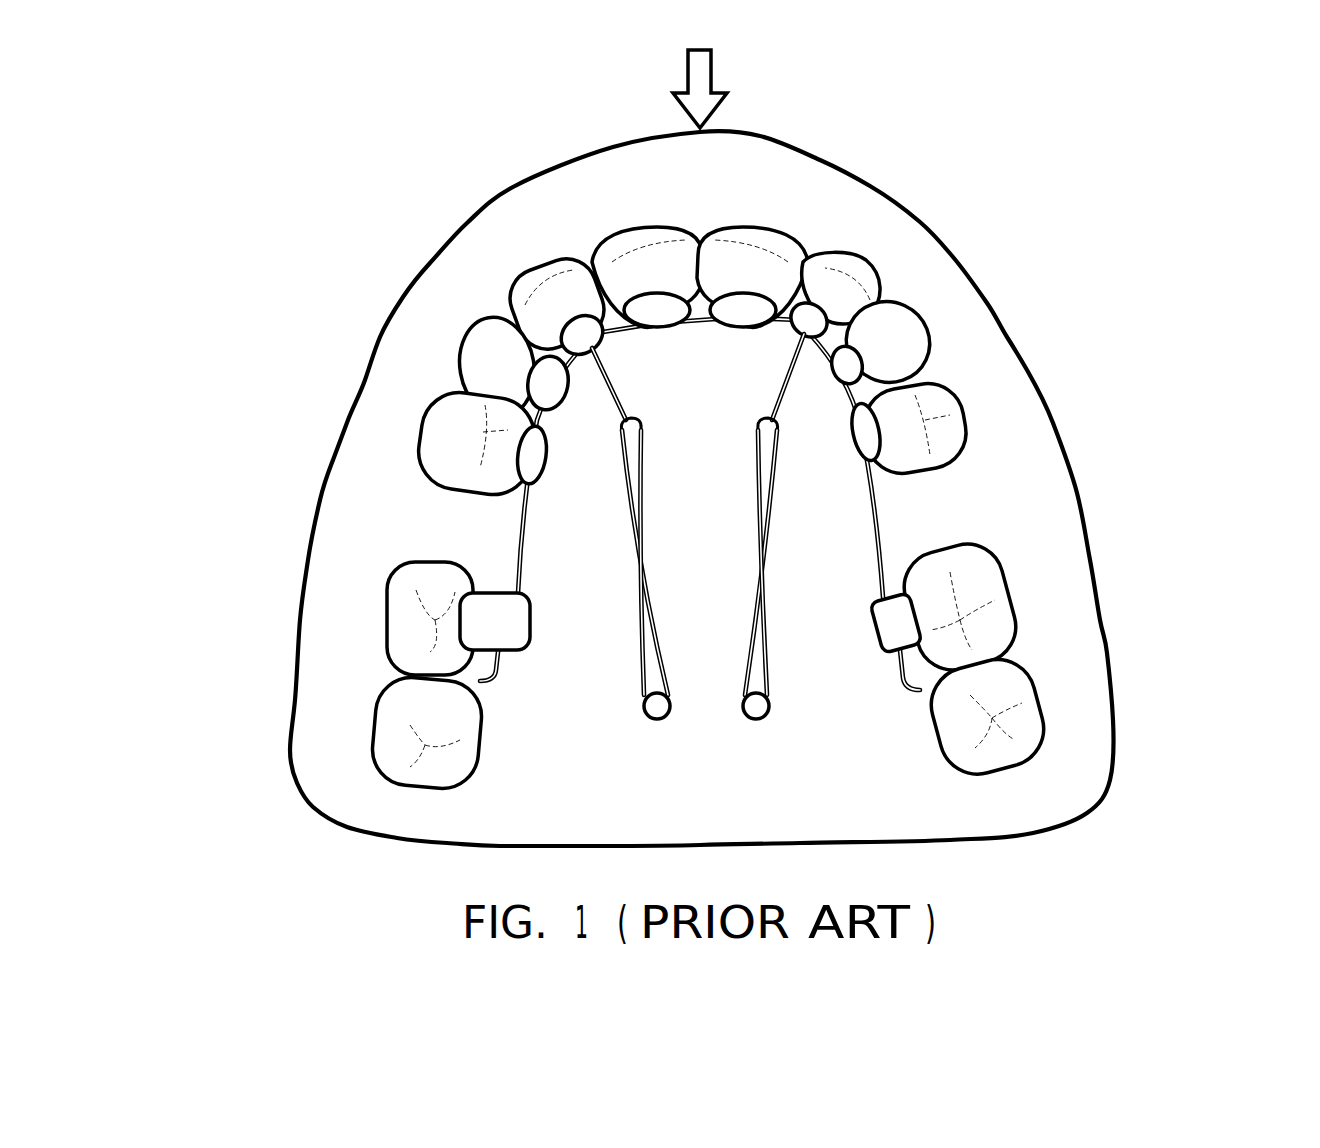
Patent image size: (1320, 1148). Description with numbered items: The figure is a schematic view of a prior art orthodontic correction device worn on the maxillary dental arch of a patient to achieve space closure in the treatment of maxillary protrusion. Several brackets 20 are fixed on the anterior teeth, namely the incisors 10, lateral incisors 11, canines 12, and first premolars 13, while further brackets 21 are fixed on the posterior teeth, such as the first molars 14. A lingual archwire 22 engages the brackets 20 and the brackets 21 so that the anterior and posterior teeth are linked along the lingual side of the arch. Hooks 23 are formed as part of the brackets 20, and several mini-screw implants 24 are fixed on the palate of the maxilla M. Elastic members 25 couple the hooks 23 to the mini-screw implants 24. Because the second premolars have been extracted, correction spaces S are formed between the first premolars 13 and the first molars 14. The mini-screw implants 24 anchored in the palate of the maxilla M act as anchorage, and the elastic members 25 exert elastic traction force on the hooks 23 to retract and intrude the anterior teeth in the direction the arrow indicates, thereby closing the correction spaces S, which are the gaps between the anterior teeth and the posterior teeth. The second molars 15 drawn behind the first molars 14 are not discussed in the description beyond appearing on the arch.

The incisors 10 is at (613, 267).
The lateral incisors 11 is at (572, 267).
The canines 12 is at (503, 337).
The first premolars 13 is at (453, 423).
The first molars 14 is at (410, 647).
The second molars 15 is at (395, 743).
The brackets 20 is at (587, 340).
The brackets 21 is at (510, 617).
The lingual archwire 22 is at (520, 538).
The hooks 23 is at (757, 418).
The mini-screw implants 24 is at (660, 710).
The elastic members 25 is at (643, 507).
The correction spaces S is at (410, 513).
The maxilla M is at (896, 817).